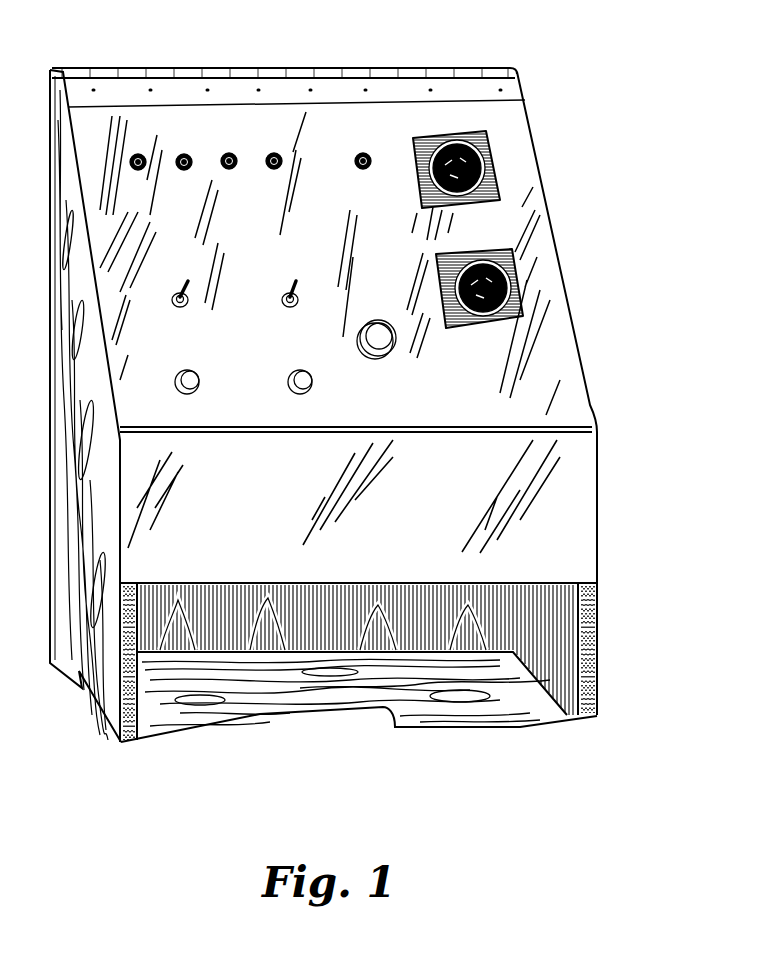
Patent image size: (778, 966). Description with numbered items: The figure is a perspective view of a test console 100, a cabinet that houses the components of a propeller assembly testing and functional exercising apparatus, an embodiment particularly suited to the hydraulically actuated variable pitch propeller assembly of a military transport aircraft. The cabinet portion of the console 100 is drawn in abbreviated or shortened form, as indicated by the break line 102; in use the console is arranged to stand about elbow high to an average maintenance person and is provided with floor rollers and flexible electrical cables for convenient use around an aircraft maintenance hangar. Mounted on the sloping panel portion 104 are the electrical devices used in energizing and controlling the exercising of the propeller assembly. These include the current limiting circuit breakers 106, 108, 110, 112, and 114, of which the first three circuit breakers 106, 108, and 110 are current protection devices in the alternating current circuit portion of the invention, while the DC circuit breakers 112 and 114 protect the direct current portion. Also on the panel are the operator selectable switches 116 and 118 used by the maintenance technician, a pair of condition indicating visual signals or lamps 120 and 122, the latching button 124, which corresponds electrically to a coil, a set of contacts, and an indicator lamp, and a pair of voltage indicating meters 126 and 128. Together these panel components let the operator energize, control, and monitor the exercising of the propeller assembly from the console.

The test console 100 is at (597, 658).
The break line 102 is at (330, 708).
The sloping panel portion 104 is at (328, 251).
The current limiting circuit breaker 106 is at (138, 154).
The current limiting circuit breaker 108 is at (185, 154).
The current limiting circuit breaker 110 is at (230, 153).
The DC circuit breaker 112 is at (275, 153).
The DC circuit breaker 114 is at (364, 153).
The operator selectable switch 116 is at (178, 296).
The operator selectable switch 118 is at (280, 299).
The condition indicating lamp 120 is at (199, 382).
The condition indicating lamp 122 is at (309, 373).
The latching button 124 is at (390, 352).
The voltage indicating meter 126 is at (513, 262).
The voltage indicating meter 128 is at (487, 132).